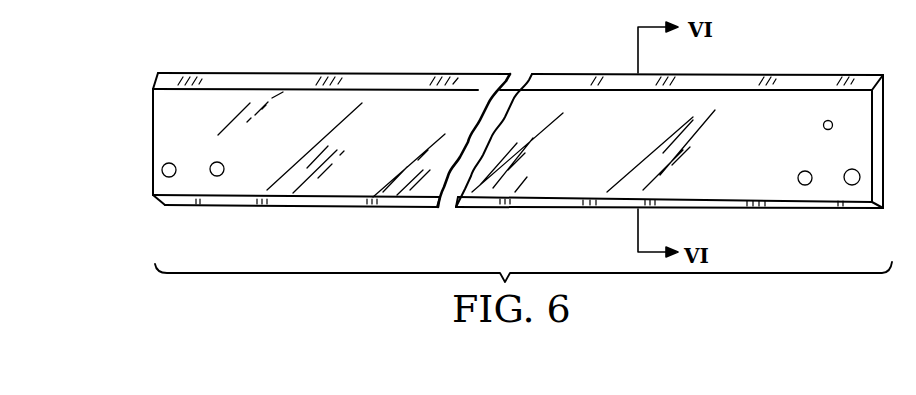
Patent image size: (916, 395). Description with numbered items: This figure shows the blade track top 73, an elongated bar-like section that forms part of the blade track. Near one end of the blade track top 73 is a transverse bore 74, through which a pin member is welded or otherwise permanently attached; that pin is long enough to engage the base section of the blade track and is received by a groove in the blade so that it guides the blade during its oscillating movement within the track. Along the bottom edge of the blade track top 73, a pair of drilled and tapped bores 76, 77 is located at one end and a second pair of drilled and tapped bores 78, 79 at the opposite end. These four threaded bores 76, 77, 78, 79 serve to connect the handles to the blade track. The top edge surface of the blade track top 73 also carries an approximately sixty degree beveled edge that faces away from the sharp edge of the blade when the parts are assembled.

The blade track top 73 is at (372, 71).
The transverse bore 74 is at (823, 125).
The drilled and tapped bore 76 is at (852, 170).
The drilled and tapped bore 77 is at (800, 172).
The drilled and tapped bore 78 is at (224, 165).
The drilled and tapped bore 79 is at (175, 163).